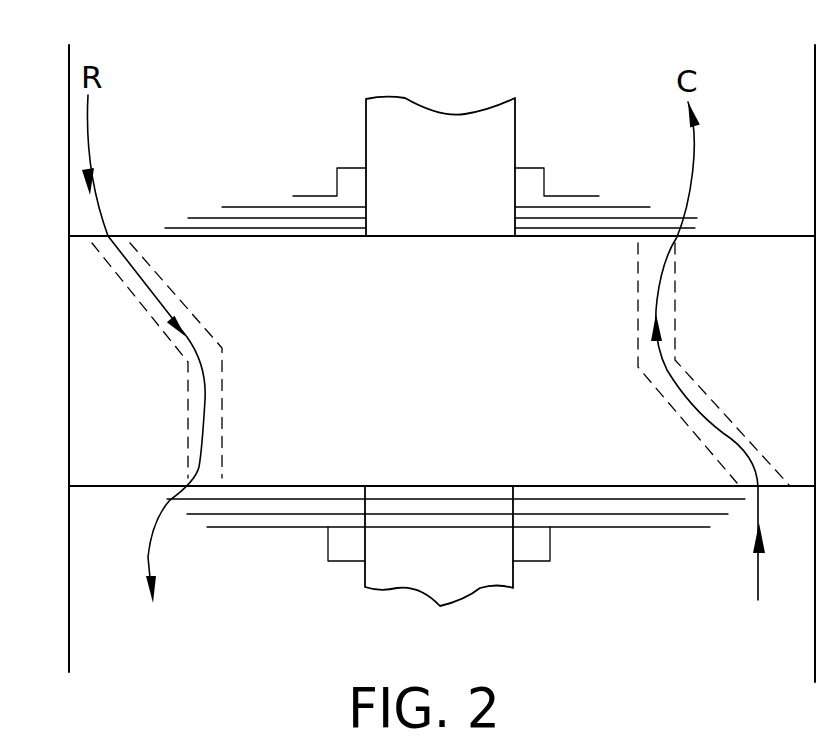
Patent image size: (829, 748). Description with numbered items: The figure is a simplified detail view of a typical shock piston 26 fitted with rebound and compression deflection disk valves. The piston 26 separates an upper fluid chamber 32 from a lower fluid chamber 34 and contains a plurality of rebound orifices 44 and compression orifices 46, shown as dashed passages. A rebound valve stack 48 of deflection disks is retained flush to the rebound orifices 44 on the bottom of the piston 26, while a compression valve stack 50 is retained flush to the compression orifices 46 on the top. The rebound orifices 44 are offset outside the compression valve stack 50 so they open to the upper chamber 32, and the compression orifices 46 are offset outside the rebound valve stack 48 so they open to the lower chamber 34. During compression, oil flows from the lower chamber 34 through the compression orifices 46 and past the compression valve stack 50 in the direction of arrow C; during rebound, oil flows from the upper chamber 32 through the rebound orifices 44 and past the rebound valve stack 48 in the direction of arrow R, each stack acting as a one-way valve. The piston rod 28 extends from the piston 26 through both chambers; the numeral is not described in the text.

The shock piston 26 is at (95, 393).
The piston rod 28 is at (478, 574).
The upper fluid chamber 32 is at (197, 57).
The lower fluid chamber 34 is at (309, 633).
The rebound orifices 44 is at (138, 280).
The compression orifices 46 is at (708, 430).
The rebound valve stack 48 is at (633, 530).
The compression valve stack 50 is at (240, 206).